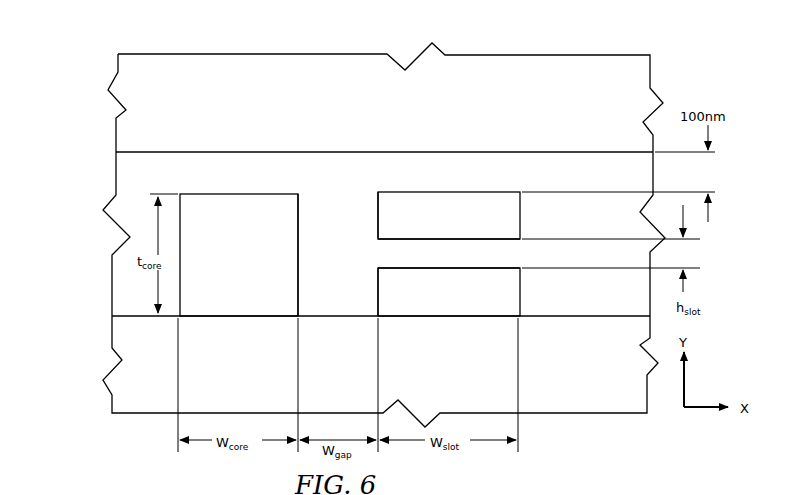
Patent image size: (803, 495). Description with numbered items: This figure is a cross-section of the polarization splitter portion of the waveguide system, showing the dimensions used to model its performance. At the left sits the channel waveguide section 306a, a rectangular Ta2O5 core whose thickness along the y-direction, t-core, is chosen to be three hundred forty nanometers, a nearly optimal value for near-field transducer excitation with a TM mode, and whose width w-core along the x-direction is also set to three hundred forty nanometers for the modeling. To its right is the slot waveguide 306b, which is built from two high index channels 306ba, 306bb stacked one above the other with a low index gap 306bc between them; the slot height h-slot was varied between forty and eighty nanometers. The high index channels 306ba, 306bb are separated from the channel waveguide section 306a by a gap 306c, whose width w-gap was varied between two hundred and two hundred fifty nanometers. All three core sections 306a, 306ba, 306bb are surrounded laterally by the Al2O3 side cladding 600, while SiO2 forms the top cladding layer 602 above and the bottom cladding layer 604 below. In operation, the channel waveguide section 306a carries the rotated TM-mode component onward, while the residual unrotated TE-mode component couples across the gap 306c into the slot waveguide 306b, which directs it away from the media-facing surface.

The top cladding layer 602 is at (128, 72).
The side cladding 600 is at (130, 182).
The bottom cladding layer 604 is at (126, 367).
The channel waveguide section 306a is at (239, 255).
The slot waveguide 306b is at (449, 205).
The gap 306c is at (338, 254).
The high index channel 306ba is at (449, 215).
The low index gap 306bc is at (449, 253).
The high index channel 306bb is at (449, 292).